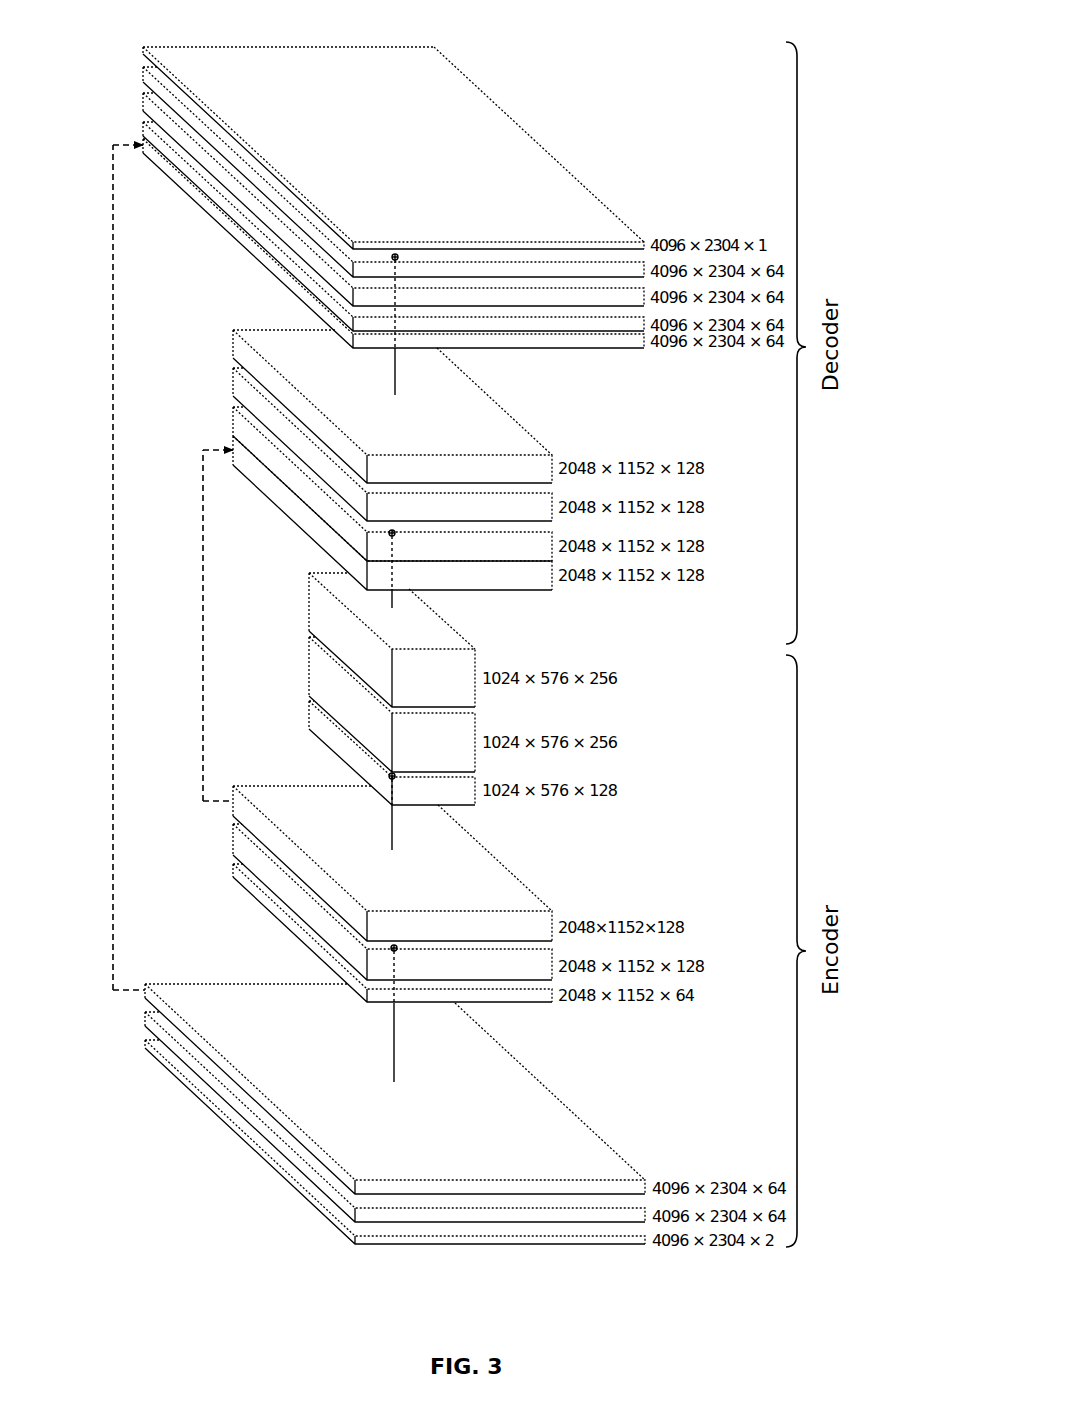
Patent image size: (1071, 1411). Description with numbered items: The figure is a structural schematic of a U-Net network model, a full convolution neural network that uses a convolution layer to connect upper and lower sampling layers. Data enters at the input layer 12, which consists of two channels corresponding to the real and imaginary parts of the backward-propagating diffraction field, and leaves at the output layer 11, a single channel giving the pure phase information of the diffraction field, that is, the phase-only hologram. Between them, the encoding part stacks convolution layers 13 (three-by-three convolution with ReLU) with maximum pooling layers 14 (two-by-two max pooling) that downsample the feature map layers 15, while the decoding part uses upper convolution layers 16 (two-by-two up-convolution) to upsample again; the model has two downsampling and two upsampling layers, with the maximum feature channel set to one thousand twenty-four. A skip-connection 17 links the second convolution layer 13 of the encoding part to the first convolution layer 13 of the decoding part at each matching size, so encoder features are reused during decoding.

The output layer 11 is at (493, 152).
The input layer 12 is at (465, 1240).
The convolution layer 13 is at (152, 110).
The maximum pooling layer 14 is at (325, 732).
The feature map layer 15 is at (237, 228).
The upper convolution layer 16 is at (152, 137).
The skip-connection 17 is at (202, 677).